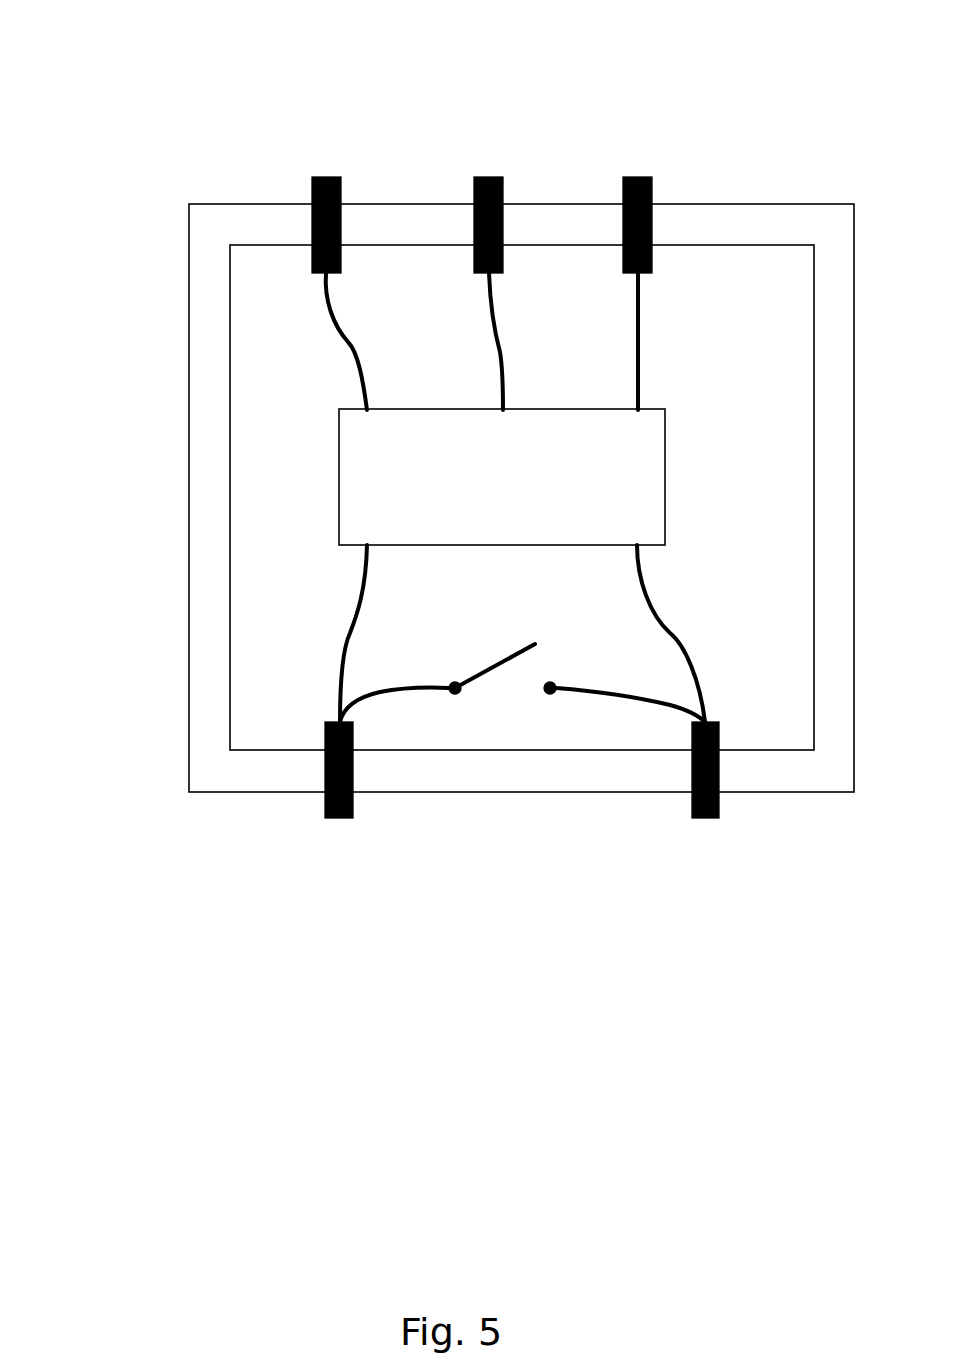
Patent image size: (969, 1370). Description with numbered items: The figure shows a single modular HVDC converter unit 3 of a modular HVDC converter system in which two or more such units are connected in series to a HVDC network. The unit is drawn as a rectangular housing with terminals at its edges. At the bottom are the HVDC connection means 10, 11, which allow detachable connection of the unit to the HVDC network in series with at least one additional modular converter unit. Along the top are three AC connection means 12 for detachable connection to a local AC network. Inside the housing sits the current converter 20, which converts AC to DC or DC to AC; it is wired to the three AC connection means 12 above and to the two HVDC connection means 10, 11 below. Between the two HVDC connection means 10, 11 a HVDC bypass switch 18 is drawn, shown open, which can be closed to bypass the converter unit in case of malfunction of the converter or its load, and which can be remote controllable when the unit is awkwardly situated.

The modular HVDC converter unit 3 is at (188, 499).
The HVDC connection means 10 is at (340, 818).
The HVDC connection means 11 is at (705, 818).
The AC connection means 12 is at (638, 177).
The HVDC bypass switch 18 is at (499, 667).
The current converter 20 is at (502, 477).